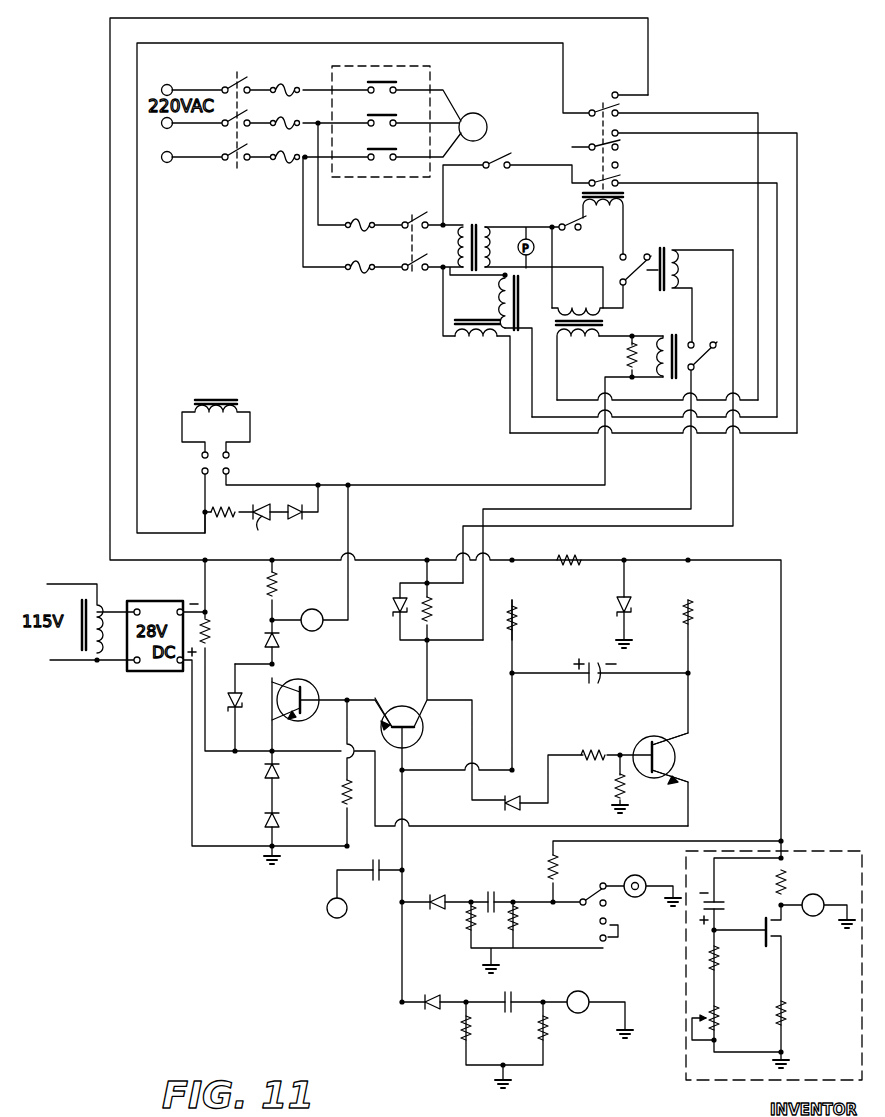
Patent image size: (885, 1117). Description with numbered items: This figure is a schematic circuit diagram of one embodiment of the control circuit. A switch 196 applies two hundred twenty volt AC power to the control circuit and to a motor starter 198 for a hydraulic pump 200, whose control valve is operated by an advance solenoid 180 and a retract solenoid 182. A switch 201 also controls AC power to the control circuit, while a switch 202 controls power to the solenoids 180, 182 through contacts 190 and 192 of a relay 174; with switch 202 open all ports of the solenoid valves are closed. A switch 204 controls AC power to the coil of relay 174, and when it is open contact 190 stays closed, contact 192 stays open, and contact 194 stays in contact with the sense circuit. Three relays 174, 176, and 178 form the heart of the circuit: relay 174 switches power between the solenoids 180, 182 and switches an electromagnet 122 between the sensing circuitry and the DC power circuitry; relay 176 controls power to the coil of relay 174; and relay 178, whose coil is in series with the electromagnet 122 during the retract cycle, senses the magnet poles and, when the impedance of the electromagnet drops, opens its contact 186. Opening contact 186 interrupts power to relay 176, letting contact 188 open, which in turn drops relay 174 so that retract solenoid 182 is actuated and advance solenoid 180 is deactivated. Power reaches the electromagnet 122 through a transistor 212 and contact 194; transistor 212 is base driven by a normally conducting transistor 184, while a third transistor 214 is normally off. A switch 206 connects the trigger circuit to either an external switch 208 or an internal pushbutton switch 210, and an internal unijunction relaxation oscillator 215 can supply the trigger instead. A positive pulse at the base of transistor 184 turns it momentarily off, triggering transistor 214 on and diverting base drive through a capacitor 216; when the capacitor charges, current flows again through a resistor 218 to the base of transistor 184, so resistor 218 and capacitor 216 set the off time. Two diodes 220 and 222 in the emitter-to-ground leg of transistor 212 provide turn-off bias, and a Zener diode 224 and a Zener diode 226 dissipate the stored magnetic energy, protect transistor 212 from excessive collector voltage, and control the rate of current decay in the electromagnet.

The electromagnet 122 is at (216, 416).
The relay 174 is at (603, 223).
The relay 176 is at (680, 272).
The relay 178 is at (662, 355).
The advance solenoid 180 is at (486, 340).
The retract solenoid 182 is at (506, 297).
The transistor 184 is at (418, 740).
The contact 186 is at (704, 350).
The contact 188 is at (634, 264).
The contact 190 is at (616, 180).
The contact 192 is at (617, 150).
The contact 194 is at (611, 97).
The switch 196 is at (228, 165).
The motor starter 198 is at (393, 178).
The hydraulic pump 200 is at (482, 112).
The switch 201 is at (413, 270).
The switch 202 is at (493, 158).
The switch 204 is at (562, 222).
The switch 206 is at (590, 907).
The external switch 208 is at (640, 876).
The internal pushbutton switch 210 is at (612, 941).
The transistor 212 is at (318, 690).
The third transistor 214 is at (638, 742).
The internal unijunction relaxation oscillator 215 is at (736, 1082).
The capacitor 216 is at (605, 678).
The resistor 218 is at (519, 622).
The diode 220 is at (281, 773).
The diode 222 is at (281, 822).
The Zener diode 224 is at (270, 527).
The Zener diode 226 is at (228, 700).